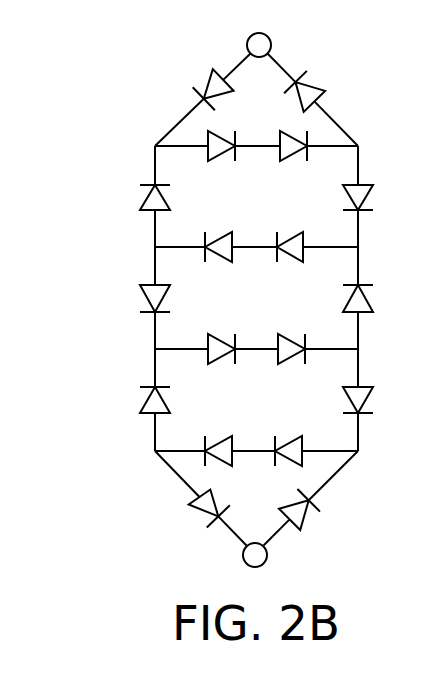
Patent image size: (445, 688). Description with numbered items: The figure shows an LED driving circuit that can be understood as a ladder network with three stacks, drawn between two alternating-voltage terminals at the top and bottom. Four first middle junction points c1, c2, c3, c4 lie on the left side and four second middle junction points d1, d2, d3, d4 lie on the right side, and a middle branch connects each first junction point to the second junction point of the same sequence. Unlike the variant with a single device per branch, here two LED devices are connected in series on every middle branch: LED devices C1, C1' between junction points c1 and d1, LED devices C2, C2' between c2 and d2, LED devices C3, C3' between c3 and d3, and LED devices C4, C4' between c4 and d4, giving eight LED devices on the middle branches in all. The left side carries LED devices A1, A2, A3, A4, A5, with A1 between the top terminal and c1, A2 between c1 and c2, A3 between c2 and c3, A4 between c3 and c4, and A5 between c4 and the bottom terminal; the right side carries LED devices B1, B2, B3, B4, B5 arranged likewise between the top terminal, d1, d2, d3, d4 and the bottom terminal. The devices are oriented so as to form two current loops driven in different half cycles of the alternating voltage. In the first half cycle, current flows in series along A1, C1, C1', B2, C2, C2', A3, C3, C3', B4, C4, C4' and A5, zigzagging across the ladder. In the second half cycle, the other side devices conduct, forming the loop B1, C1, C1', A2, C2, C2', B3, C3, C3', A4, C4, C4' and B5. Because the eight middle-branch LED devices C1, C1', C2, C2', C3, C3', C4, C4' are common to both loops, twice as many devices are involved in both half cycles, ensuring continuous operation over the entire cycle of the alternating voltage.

The LED device A1 is at (199, 82).
The LED device A2 is at (131, 198).
The LED device A3 is at (131, 300).
The LED device A4 is at (131, 403).
The LED device A5 is at (198, 519).
The LED device B1 is at (320, 86).
The LED device B2 is at (380, 198).
The LED device B3 is at (380, 300).
The LED device B4 is at (380, 402).
The LED device B5 is at (318, 514).
The LED device C1 is at (224, 166).
The LED device C1' is at (299, 166).
The LED device C2 is at (219, 265).
The LED device C2' is at (297, 265).
The LED device C3 is at (219, 369).
The LED device C3' is at (297, 369).
The LED device C4 is at (236, 468).
The LED device C4' is at (311, 443).
The first middle junction point c1 is at (165, 143).
The first middle junction point c2 is at (164, 245).
The first middle junction point c3 is at (161, 348).
The first middle junction point c4 is at (161, 452).
The second middle junction point d1 is at (350, 146).
The second middle junction point d2 is at (348, 247).
The second middle junction point d3 is at (349, 350).
The second middle junction point d4 is at (347, 452).